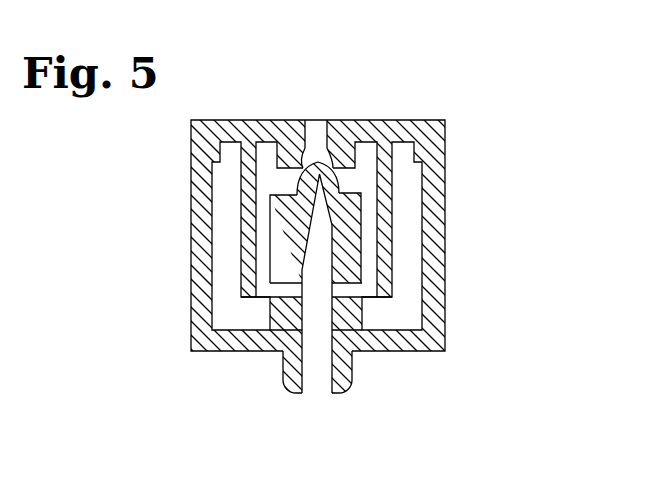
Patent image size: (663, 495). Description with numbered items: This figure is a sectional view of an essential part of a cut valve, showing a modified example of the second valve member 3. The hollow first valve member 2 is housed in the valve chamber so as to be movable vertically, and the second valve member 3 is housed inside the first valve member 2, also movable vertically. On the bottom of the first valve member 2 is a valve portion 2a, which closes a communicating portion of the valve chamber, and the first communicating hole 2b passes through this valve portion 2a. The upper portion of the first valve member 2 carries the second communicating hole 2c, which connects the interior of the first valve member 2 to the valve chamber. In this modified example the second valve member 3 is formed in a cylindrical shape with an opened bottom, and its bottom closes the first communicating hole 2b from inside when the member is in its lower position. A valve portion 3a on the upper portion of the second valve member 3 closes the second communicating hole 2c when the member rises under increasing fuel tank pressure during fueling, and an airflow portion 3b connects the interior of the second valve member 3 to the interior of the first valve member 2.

The first valve member 2 is at (437, 272).
The valve portion 2a is at (342, 377).
The first communicating hole 2b is at (317, 370).
The second communicating hole 2c is at (318, 119).
The second valve member 3 is at (363, 214).
The valve portion 3a is at (333, 178).
The airflow portion 3b is at (285, 290).